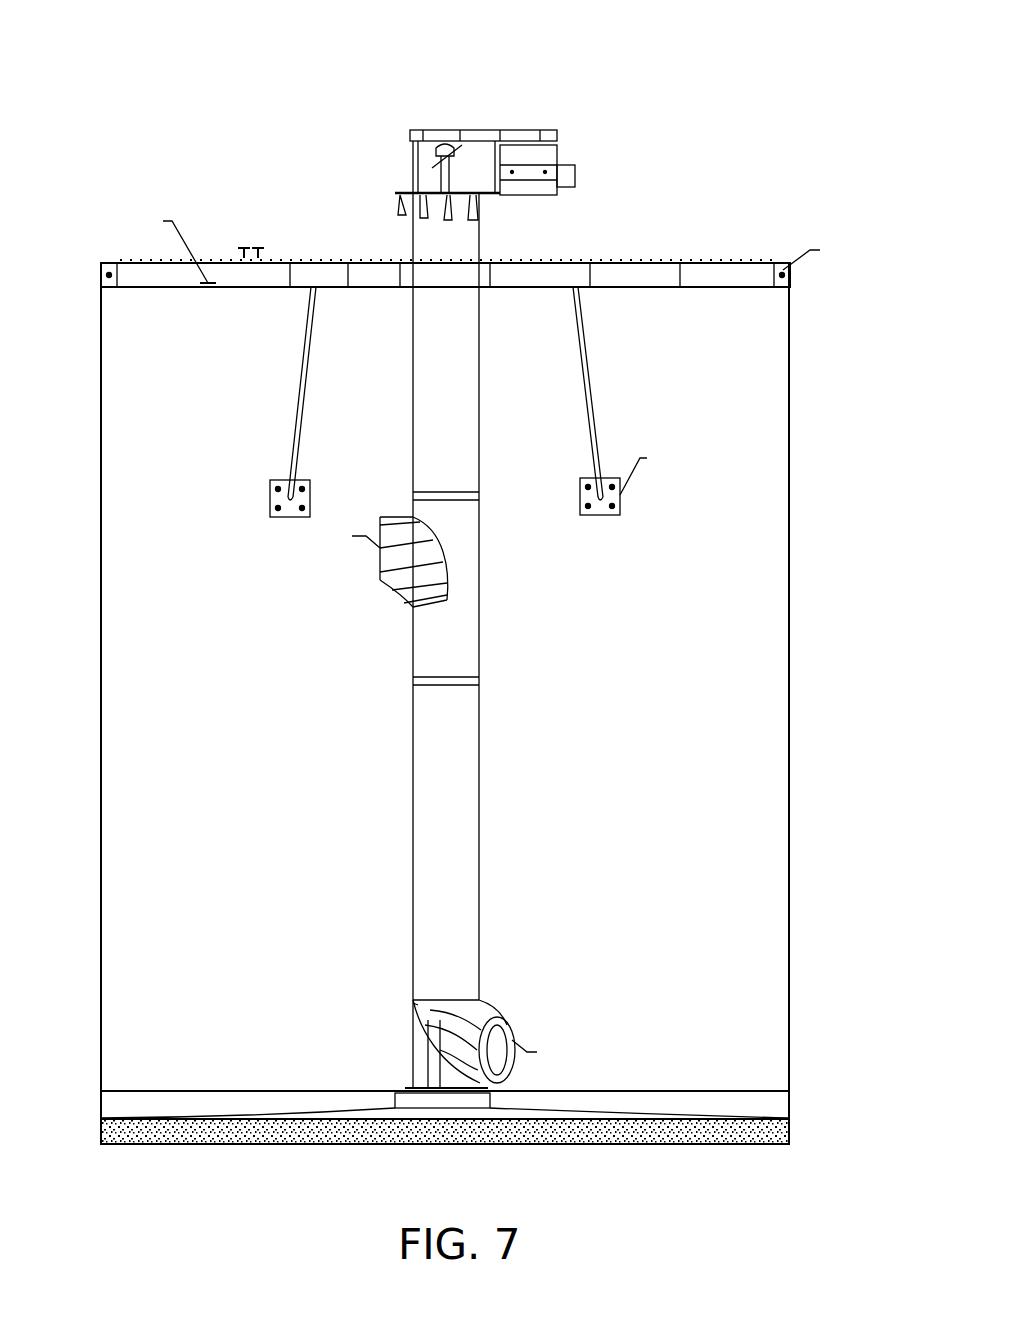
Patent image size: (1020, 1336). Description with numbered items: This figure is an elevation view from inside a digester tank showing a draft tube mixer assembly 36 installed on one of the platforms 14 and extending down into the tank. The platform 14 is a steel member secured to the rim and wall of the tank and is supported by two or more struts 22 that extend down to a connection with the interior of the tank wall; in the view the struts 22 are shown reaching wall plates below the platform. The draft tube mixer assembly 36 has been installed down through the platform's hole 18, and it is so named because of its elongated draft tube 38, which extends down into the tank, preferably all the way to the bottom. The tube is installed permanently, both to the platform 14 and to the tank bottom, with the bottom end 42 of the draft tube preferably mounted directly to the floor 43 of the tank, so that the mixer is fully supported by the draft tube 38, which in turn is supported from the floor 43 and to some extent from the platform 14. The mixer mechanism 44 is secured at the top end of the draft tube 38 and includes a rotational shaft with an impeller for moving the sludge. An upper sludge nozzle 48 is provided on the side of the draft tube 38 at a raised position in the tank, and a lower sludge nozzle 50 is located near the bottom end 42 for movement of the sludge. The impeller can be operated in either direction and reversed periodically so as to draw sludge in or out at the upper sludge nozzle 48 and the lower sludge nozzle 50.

The platform 14 is at (650, 250).
The platform's hole 18 is at (395, 193).
The struts 22 is at (300, 384).
The draft tube mixer assembly 36 is at (492, 120).
The draft tube 38 is at (463, 820).
The bottom end of the draft tube 42 is at (499, 1014).
The floor of the tank 43 is at (672, 1090).
The mixer mechanism 44 is at (545, 165).
The upper sludge nozzle 48 is at (378, 567).
The lower sludge nozzle 50 is at (620, 1068).